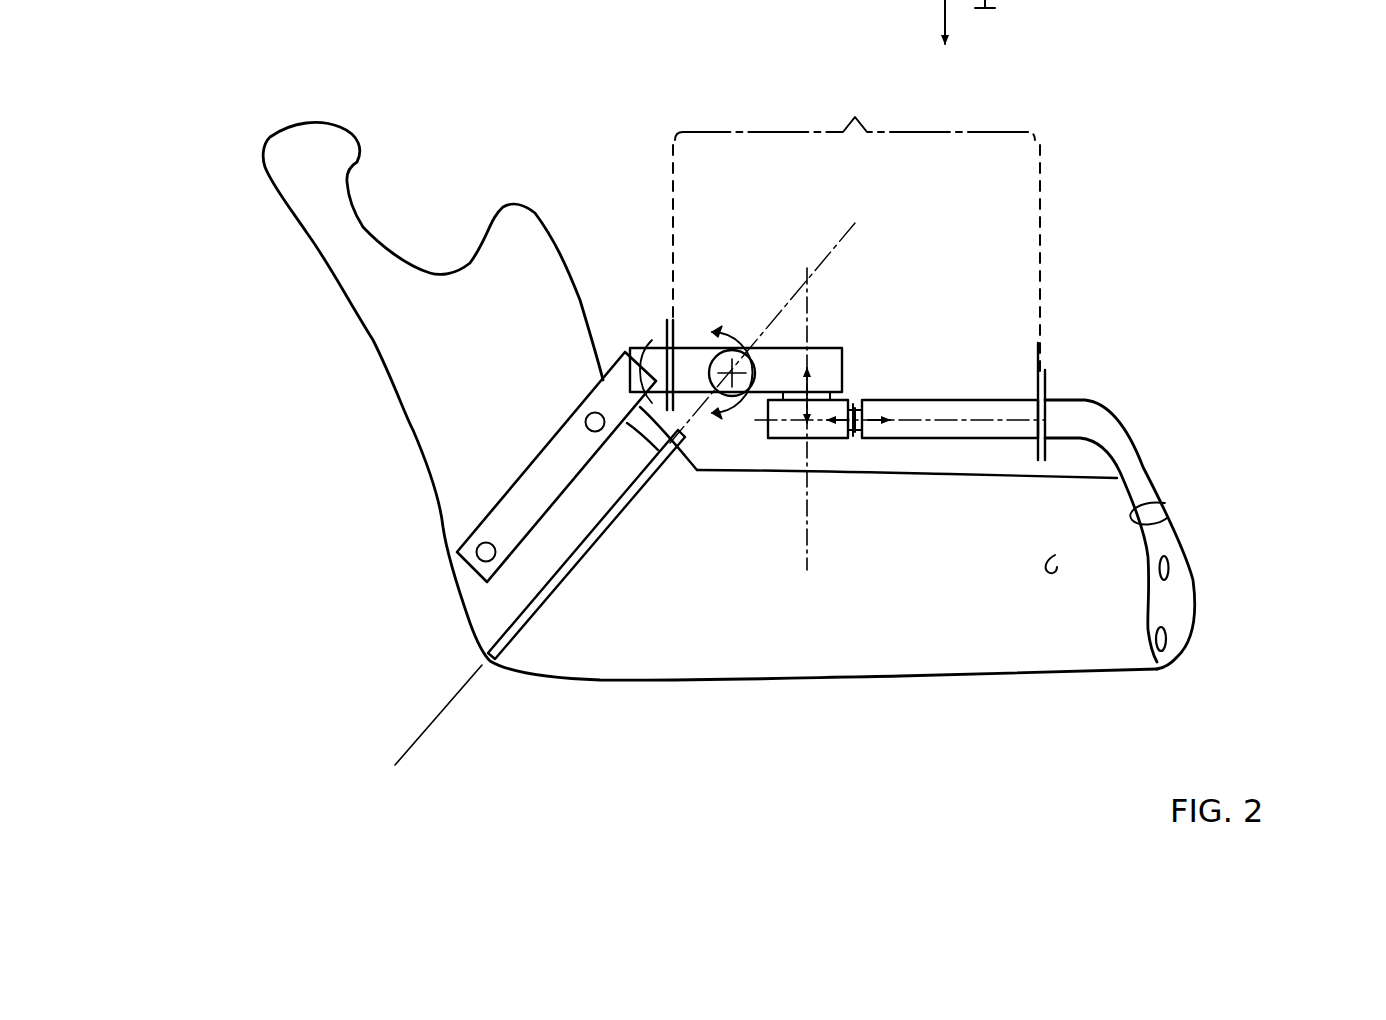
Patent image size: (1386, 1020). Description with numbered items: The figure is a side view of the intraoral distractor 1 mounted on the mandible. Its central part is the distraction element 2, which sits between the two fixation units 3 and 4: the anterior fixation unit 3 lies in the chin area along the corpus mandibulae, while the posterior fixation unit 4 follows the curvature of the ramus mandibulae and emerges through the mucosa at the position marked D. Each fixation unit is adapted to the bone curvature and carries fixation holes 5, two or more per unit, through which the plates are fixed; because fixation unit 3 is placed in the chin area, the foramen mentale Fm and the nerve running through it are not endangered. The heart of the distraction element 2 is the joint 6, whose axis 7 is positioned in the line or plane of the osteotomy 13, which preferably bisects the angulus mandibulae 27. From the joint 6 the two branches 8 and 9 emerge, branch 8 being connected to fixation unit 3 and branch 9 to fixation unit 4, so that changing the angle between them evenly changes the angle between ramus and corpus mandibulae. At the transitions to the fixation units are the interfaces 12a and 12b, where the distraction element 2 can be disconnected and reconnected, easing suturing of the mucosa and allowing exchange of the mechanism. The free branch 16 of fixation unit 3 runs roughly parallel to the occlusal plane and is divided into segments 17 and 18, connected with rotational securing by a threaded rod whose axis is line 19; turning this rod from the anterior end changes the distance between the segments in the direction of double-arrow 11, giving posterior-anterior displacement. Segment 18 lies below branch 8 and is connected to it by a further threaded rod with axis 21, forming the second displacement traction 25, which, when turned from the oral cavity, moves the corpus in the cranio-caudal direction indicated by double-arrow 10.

The distractor 1 is at (894, 388).
The distraction element 2 is at (856, 229).
The fixation unit 3 is at (1137, 483).
The fixation unit 4 is at (600, 372).
The fixation holes 5 is at (478, 549).
The joint 6 is at (739, 390).
The axis 7 is at (733, 362).
The branch 8 is at (818, 362).
The branch 9 is at (695, 362).
The double-arrow 10 is at (805, 395).
The double-arrow 11 is at (856, 402).
The interface 12a is at (648, 333).
The interface 12b is at (1048, 400).
The osteotomy 13 is at (590, 542).
The free branch 16 is at (960, 398).
The segment 17 is at (972, 428).
The segment 18 is at (832, 432).
The threaded rod axis 19 is at (922, 418).
The threaded rod axis 21 is at (808, 443).
The second displacement traction 25 is at (815, 452).
The angulus mandibulae 27 is at (490, 662).
The mucosa penetration position D is at (1168, 503).
The foramen mentale Fm is at (1055, 553).